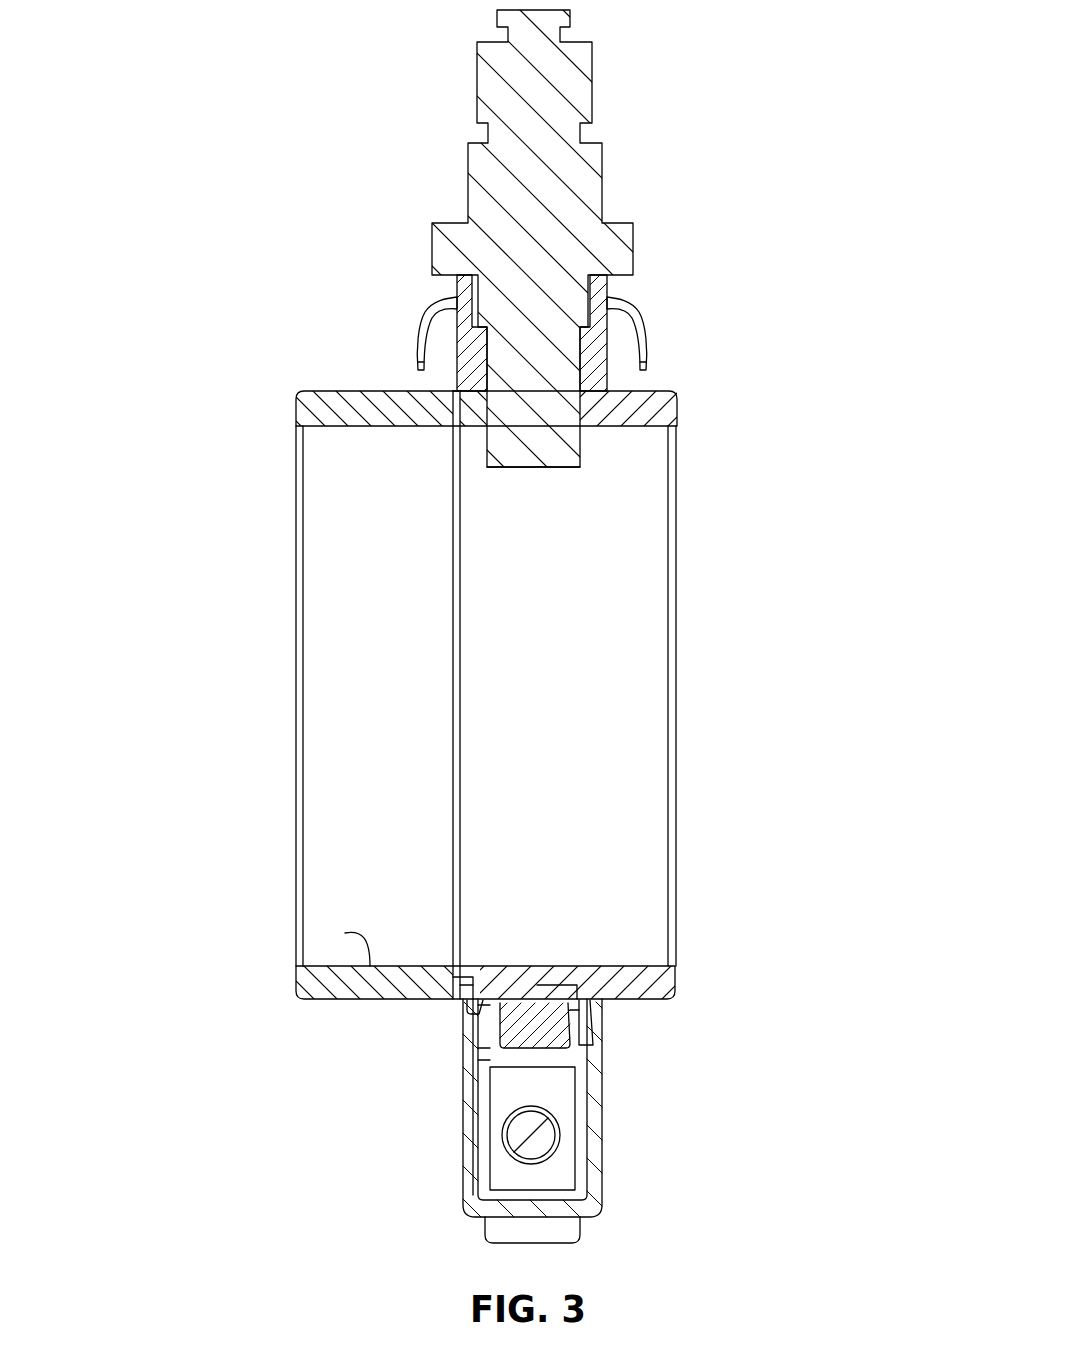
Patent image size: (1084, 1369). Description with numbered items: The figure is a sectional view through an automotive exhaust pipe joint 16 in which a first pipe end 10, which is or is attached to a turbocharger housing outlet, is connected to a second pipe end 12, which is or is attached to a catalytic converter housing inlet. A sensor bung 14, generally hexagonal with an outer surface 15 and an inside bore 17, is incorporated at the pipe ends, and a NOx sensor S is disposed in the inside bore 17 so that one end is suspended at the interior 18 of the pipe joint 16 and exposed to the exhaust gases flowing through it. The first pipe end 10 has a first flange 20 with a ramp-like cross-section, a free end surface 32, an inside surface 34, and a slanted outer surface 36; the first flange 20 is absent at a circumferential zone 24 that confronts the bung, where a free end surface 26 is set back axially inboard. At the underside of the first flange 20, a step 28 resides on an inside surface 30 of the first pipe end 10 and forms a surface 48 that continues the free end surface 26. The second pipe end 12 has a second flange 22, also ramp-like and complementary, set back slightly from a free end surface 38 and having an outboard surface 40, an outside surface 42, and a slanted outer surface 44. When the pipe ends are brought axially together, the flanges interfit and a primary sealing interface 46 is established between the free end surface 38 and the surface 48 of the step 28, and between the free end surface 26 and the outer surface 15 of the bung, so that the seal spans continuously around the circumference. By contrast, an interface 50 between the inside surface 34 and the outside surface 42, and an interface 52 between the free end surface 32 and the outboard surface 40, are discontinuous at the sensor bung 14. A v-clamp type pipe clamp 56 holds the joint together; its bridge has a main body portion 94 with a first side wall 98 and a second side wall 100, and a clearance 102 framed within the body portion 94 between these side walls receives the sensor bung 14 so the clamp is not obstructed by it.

The sensor S is at (543, 92).
The pipe joint 16 is at (408, 213).
The sensor bung 14 is at (612, 368).
The clearance 102 is at (476, 302).
The second side wall 100 is at (430, 318).
The primary sealing interface 46 is at (446, 393).
The main body portion 94 is at (628, 307).
The first side wall 98 is at (644, 332).
The circumferential zone 24 is at (447, 404).
The outer surface 15 is at (402, 380).
The free end surface 26 is at (463, 460).
The inside bore 17 is at (545, 468).
The first pipe end 10 is at (320, 883).
The second pipe end 12 is at (645, 750).
The interior 18 is at (538, 662).
The inside surface 30 is at (345, 933).
The step 28 is at (468, 1003).
The free end surface 38 is at (455, 985).
The interface 50 is at (463, 1001).
The surface 48 is at (463, 992).
The outside surface 42 is at (537, 1003).
The second flange 22 is at (582, 1010).
The outboard surface 40 is at (580, 1006).
The outer surface 44 is at (585, 1008).
The inside surface 34 is at (470, 1000).
The first flange 20 is at (466, 1005).
The outer surface 36 is at (460, 1030).
The free end surface 32 is at (473, 1007).
The interface 52 is at (535, 1052).
The pipe clamp 56 is at (448, 1136).